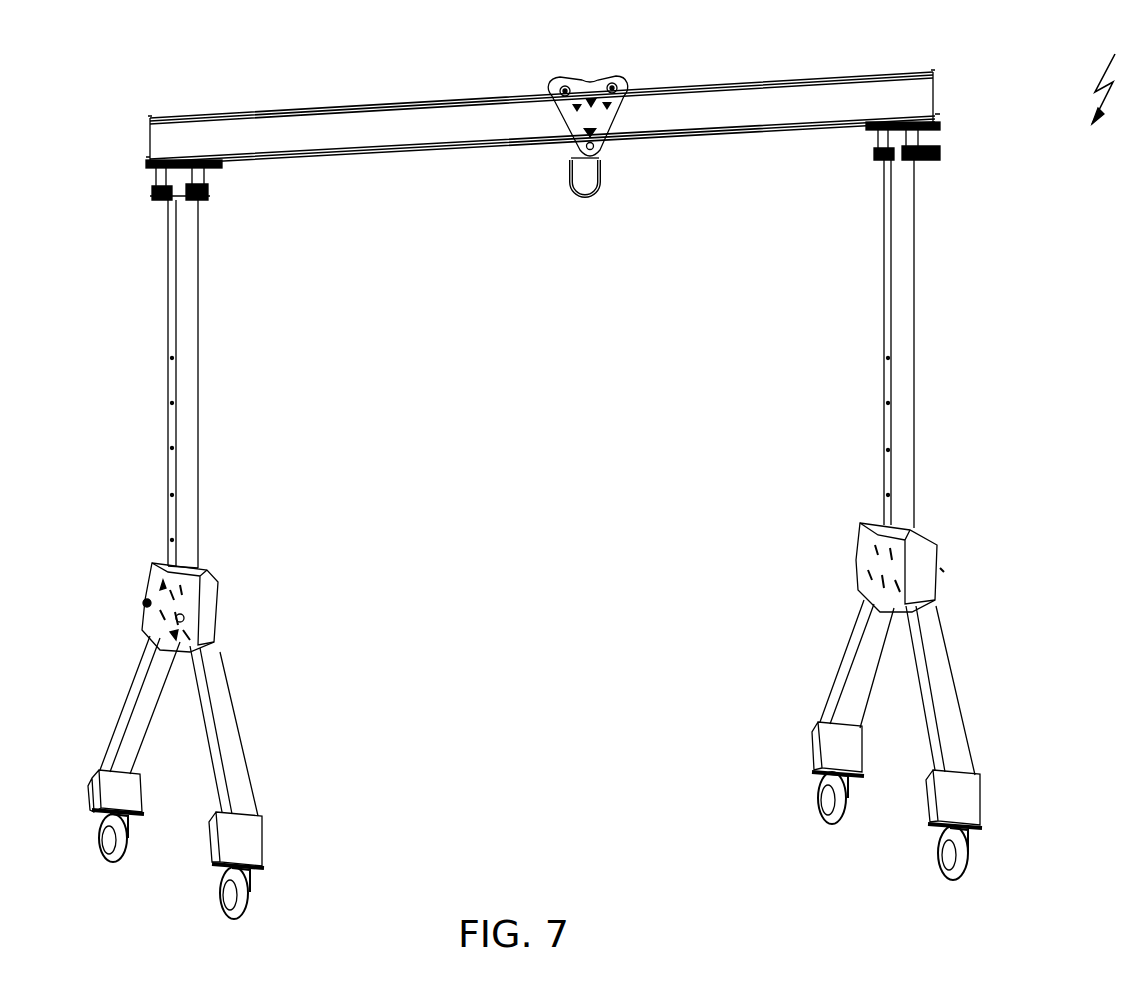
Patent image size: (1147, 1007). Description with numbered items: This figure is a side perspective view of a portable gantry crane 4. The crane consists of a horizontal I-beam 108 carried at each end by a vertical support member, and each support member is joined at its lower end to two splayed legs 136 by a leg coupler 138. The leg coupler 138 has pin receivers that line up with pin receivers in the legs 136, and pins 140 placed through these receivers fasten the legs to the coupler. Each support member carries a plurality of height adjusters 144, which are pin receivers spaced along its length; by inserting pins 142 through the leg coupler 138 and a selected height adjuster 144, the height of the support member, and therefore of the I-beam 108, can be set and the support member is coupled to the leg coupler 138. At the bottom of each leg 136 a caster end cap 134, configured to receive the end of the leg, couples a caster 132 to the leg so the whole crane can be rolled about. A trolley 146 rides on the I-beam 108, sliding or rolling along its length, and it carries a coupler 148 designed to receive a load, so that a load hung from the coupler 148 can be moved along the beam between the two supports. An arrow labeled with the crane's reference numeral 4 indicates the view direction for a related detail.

The portable gantry crane 4 is at (1107, 76).
The I-beam 108 is at (343, 104).
The caster 132 is at (252, 898).
The caster end cap 134 is at (262, 832).
The leg 136 is at (116, 726).
The leg coupler 138 is at (218, 600).
The pin 140 is at (142, 604).
The pin 142 is at (160, 578).
The height adjuster 144 is at (170, 358).
The trolley 146 is at (583, 78).
The coupler 148 is at (585, 198).